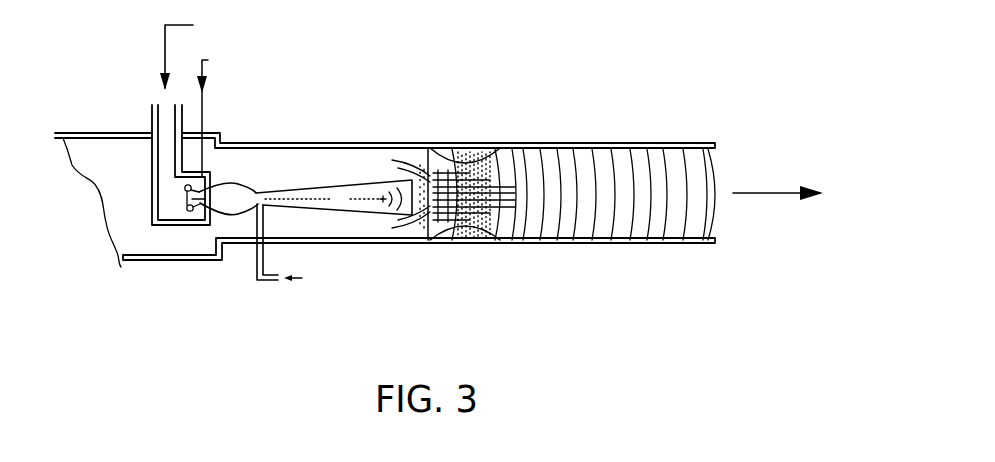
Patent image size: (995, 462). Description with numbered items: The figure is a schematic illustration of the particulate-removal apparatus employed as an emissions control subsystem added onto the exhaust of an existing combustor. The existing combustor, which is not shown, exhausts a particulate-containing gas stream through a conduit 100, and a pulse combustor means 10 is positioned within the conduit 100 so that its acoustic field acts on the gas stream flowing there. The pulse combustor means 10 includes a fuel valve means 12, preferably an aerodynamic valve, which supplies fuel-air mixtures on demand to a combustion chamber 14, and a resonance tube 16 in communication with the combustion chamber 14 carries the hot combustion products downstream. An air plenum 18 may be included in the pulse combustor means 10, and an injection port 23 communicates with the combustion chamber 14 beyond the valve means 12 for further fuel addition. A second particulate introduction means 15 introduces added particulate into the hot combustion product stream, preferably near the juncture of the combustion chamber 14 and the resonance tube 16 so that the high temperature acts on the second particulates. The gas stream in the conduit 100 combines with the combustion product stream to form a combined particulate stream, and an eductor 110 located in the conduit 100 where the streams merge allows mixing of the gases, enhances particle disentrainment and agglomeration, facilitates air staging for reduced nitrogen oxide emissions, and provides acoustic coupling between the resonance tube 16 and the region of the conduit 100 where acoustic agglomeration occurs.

The conduit 100 is at (88, 131).
The air plenum 18 is at (153, 182).
The injection port 23 is at (203, 117).
The fuel valve means 12 is at (188, 217).
The combustion chamber 14 is at (240, 181).
The resonance tube 16 is at (322, 185).
The second particulate introduction means 15 is at (255, 270).
The pulse combustor means 10 is at (310, 228).
The eductor 110 is at (463, 157).